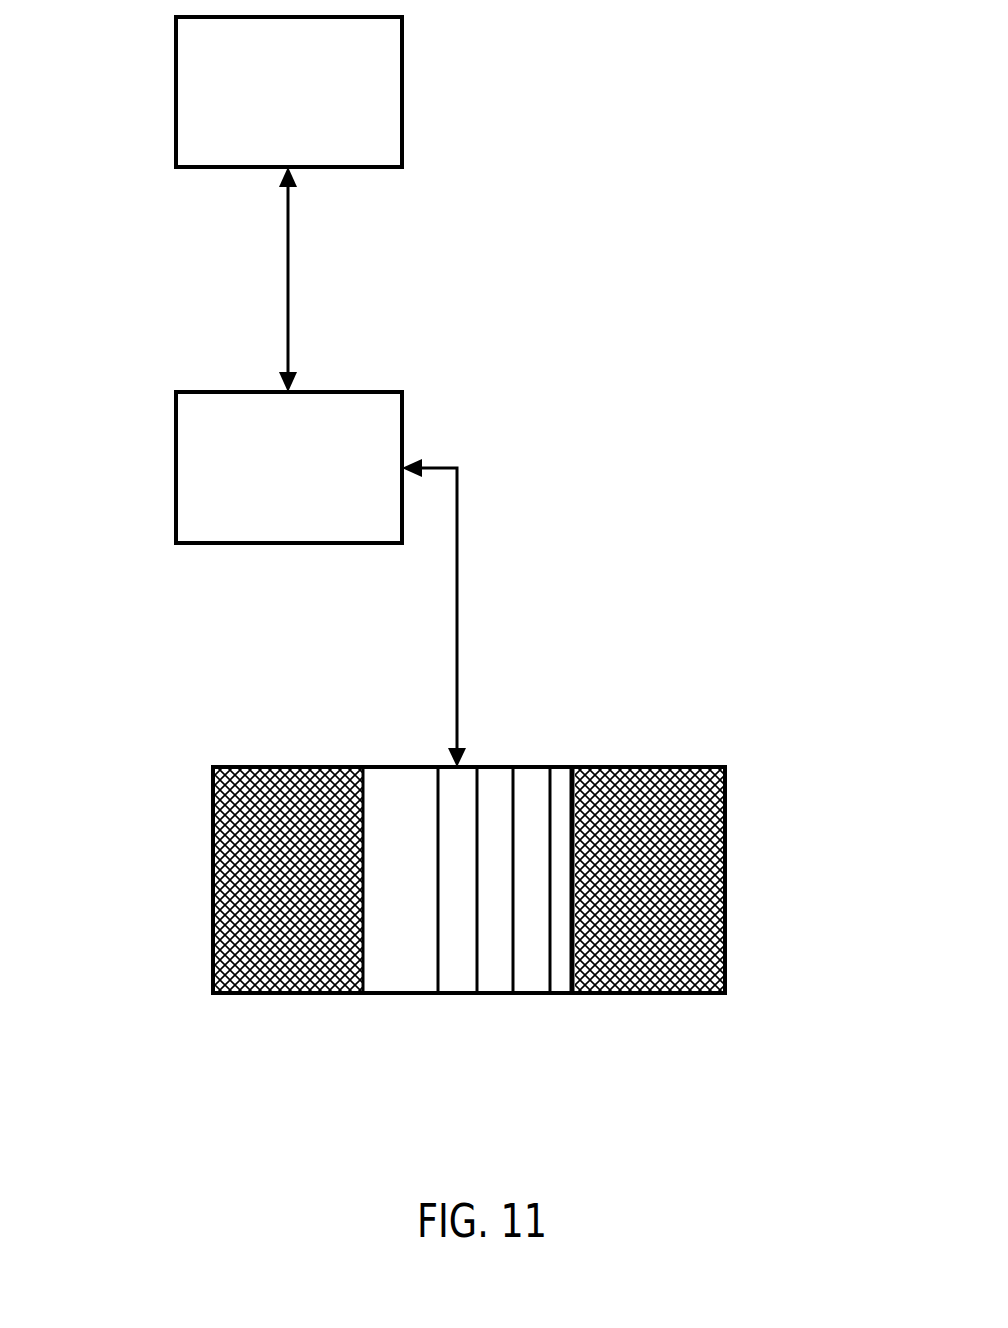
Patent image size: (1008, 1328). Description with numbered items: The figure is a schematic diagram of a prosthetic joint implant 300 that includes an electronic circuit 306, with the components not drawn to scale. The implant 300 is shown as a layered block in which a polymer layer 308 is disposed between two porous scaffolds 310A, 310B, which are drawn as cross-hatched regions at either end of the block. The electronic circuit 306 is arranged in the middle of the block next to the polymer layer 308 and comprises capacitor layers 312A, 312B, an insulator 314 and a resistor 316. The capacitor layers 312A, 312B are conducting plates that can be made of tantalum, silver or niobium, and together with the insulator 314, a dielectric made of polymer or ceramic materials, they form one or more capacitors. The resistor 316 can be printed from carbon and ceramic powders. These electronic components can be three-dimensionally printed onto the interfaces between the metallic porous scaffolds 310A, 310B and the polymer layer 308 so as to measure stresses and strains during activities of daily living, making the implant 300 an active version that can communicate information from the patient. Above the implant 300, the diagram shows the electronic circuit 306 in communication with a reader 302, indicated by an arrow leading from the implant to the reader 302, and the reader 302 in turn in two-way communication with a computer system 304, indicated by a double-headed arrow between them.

The prosthetic joint implant 300 is at (625, 712).
The reader 302 is at (402, 418).
The computer system 304 is at (402, 90).
The electronic circuit 306 is at (495, 747).
The polymer layer 308 is at (398, 767).
The porous scaffold 310A is at (725, 878).
The porous scaffold 310B is at (212, 878).
The capacitor layer 312A is at (532, 993).
The capacitor layer 312B is at (457, 993).
The insulator 314 is at (493, 990).
The resistor 316 is at (558, 767).